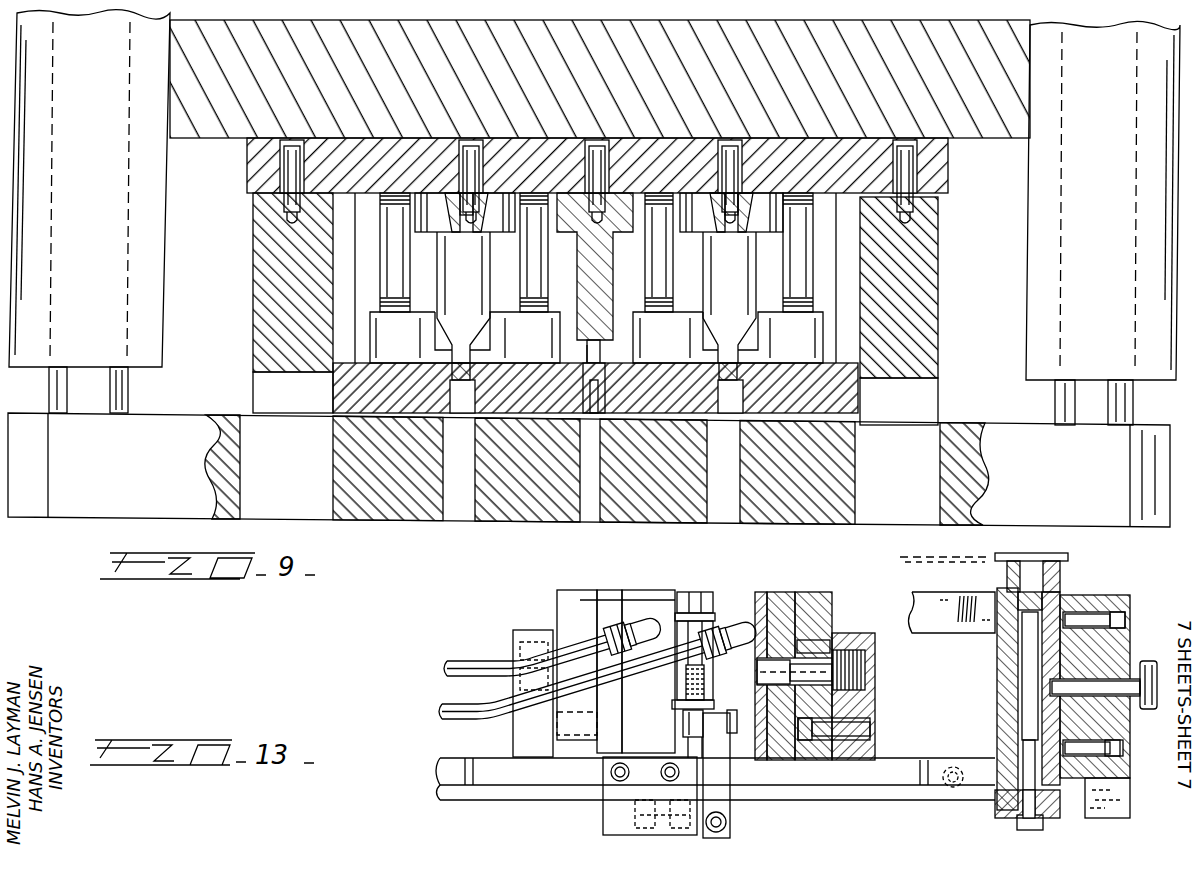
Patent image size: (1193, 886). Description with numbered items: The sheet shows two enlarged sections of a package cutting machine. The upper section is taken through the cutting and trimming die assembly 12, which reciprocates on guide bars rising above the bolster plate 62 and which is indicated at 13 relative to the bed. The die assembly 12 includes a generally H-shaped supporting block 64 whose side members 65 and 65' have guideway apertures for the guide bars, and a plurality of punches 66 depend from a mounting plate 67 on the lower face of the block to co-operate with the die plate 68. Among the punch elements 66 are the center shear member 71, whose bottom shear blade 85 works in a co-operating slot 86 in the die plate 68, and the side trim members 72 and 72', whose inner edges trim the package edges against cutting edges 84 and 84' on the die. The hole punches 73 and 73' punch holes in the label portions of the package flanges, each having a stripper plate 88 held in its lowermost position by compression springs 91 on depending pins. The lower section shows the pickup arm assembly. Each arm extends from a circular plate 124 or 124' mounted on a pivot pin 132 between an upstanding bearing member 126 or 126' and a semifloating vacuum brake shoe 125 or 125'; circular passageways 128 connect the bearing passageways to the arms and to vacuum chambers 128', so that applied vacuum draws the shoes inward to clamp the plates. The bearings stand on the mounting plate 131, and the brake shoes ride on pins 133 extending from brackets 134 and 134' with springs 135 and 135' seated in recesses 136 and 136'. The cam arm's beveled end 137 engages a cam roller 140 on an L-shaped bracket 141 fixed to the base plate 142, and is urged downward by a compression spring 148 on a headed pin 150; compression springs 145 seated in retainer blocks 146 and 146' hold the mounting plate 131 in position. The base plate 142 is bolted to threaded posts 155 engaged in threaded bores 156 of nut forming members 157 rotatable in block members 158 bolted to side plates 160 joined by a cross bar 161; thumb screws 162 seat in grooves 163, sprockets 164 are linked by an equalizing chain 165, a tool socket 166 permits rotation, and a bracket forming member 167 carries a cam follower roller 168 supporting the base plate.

In FIG. 9, the cutting and trimming die assembly 12 is at (233, 214).
In FIG. 9, the press bed 13 is at (408, 535).
In FIG. 9, the bolster plate 62 is at (525, 523).
In FIG. 9, the supporting block 64 is at (210, 128).
In FIG. 9, the side member 65 is at (105, 211).
In FIG. 9, the side member 65' is at (1077, 223).
In FIG. 9, the punches 66 is at (958, 281).
In FIG. 9, the mounting plate 67 is at (948, 173).
In FIG. 9, the die plate 68 is at (858, 393).
In FIG. 9, the center shear member 71 is at (580, 292).
In FIG. 9, the side trim member 72 is at (269, 303).
In FIG. 9, the side trim member 72' is at (921, 311).
In FIG. 9, the hole punch 73 is at (462, 286).
In FIG. 9, the hole punch 73' is at (728, 286).
In FIG. 9, the cutting edge 84 is at (341, 278).
In FIG. 9, the cutting edge 84' is at (835, 278).
In FIG. 9, the bottom shear blade 85 is at (586, 352).
In FIG. 9, the slot 86 is at (596, 345).
In FIG. 9, the stripper plate 88 is at (498, 320).
In FIG. 9, the compression spring 91 is at (387, 205).
In FIG. 13, the circular plate 124 is at (789, 656).
In FIG. 13, the circular plate 124' is at (627, 654).
In FIG. 13, the semifloating vacuum brake shoe 125 is at (828, 659).
In FIG. 13, the semifloating vacuum brake shoe 125' is at (578, 647).
In FIG. 13, the bearing member 126 is at (747, 659).
In FIG. 13, the bearing member 126' is at (643, 654).
In FIG. 13, the circular passageway 128 is at (775, 763).
In FIG. 13, the vacuum chamber 128' is at (847, 616).
In FIG. 13, the mounting plate 131 is at (890, 760).
In FIG. 13, the pivot pin 132 is at (806, 662).
In FIG. 13, the pin 133 is at (578, 722).
In FIG. 13, the bracket 134 is at (872, 696).
In FIG. 13, the bracket 134' is at (531, 676).
In FIG. 13, the spring 135 is at (842, 667).
In FIG. 13, the spring 135' is at (508, 681).
In FIG. 13, the recess 136 is at (903, 682).
In FIG. 13, the recess 136' is at (507, 644).
In FIG. 13, the beveled end 137 is at (714, 713).
In FIG. 13, the cam roller 140 is at (683, 718).
In FIG. 13, the L-shaped bracket 141 is at (712, 768).
In FIG. 13, the base plate 142 is at (776, 795).
In FIG. 13, the compression spring 145 is at (950, 766).
In FIG. 13, the retainer block 146 is at (927, 795).
In FIG. 13, the stop 146' is at (462, 803).
In FIG. 13, the compression spring 148 is at (684, 688).
In FIG. 13, the headed pin 150 is at (704, 670).
In FIG. 13, the threaded post 155 is at (1030, 688).
In FIG. 13, the threaded bore 156 is at (1025, 666).
In FIG. 13, the nut forming member 157 is at (1008, 701).
In FIG. 13, the block member 158 is at (1088, 598).
In FIG. 13, the side plate 160 is at (1120, 652).
In FIG. 13, the cross bar 161 is at (960, 596).
In FIG. 13, the thumb screw 162 is at (1120, 696).
In FIG. 13, the circumferential groove 163 is at (1053, 680).
In FIG. 13, the sprocket 164 is at (1056, 563).
In FIG. 13, the movement equalizing chain 165 is at (912, 557).
In FIG. 13, the tool receiving socket 166 is at (1030, 556).
In FIG. 13, the bracket forming member 167 is at (657, 832).
In FIG. 13, the cam follower roller 168 is at (690, 832).